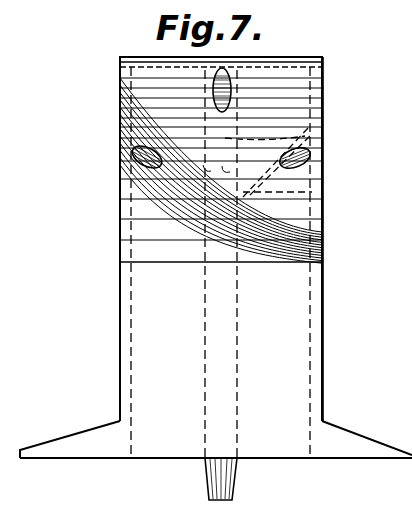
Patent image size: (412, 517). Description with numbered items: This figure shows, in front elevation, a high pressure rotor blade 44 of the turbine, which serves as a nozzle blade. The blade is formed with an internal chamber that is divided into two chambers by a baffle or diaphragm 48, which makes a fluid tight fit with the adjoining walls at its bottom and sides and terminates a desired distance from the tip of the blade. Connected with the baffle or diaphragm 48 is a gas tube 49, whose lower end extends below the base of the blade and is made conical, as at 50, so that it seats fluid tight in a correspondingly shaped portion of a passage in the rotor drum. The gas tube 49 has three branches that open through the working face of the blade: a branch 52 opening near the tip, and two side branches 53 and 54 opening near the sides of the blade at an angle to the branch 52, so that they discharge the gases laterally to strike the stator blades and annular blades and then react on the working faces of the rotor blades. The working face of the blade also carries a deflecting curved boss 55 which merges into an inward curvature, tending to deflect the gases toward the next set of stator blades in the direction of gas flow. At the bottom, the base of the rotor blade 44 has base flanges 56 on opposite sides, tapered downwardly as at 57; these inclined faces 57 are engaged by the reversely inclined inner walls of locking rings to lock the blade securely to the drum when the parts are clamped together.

The high pressure rotor blade 44 is at (323, 312).
The baffle or diaphragm 48 is at (158, 357).
The gas tube 49 is at (218, 337).
The conical lower end of gas tube 50 is at (220, 487).
The branch 52 is at (257, 132).
The side branch 53 is at (160, 190).
The side branch 54 is at (324, 121).
The deflecting curved boss 55 is at (200, 234).
The base flange 56 is at (82, 446).
The tapered face of base flange 57 is at (65, 423).